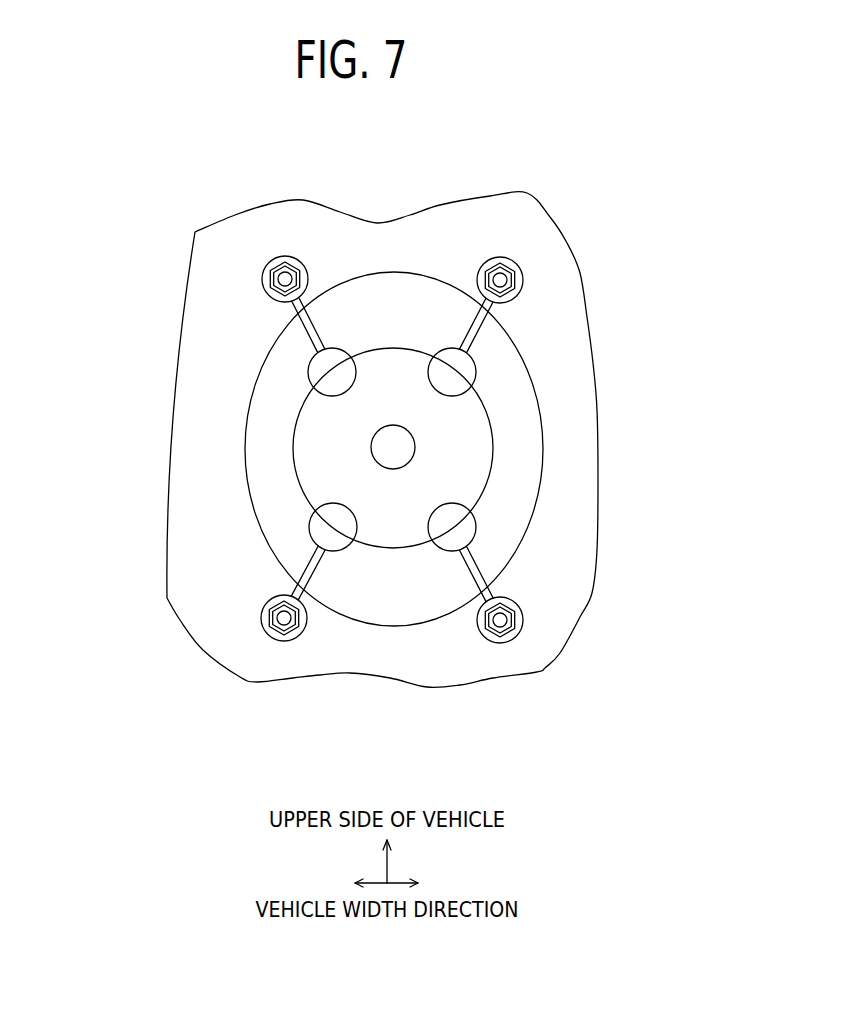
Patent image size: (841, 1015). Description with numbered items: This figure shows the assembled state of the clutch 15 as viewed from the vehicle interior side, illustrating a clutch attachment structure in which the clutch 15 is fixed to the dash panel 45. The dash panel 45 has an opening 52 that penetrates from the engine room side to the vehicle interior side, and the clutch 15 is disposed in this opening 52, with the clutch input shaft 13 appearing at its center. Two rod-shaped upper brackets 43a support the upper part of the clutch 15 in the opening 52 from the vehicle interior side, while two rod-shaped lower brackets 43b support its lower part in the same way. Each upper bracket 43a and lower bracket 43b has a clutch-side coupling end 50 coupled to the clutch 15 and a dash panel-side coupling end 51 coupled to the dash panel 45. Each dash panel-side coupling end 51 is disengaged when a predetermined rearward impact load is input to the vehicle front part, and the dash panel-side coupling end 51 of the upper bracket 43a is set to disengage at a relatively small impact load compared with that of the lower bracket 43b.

The clutch input shaft 13 is at (400, 443).
The clutch 15 is at (310, 470).
The upper bracket 43a is at (303, 330).
The lower bracket 43b is at (300, 572).
The dash panel 45 is at (358, 237).
The clutch-side coupling end 50 is at (320, 375).
The dash panel-side coupling end 51 is at (277, 254).
The opening 52 is at (400, 590).